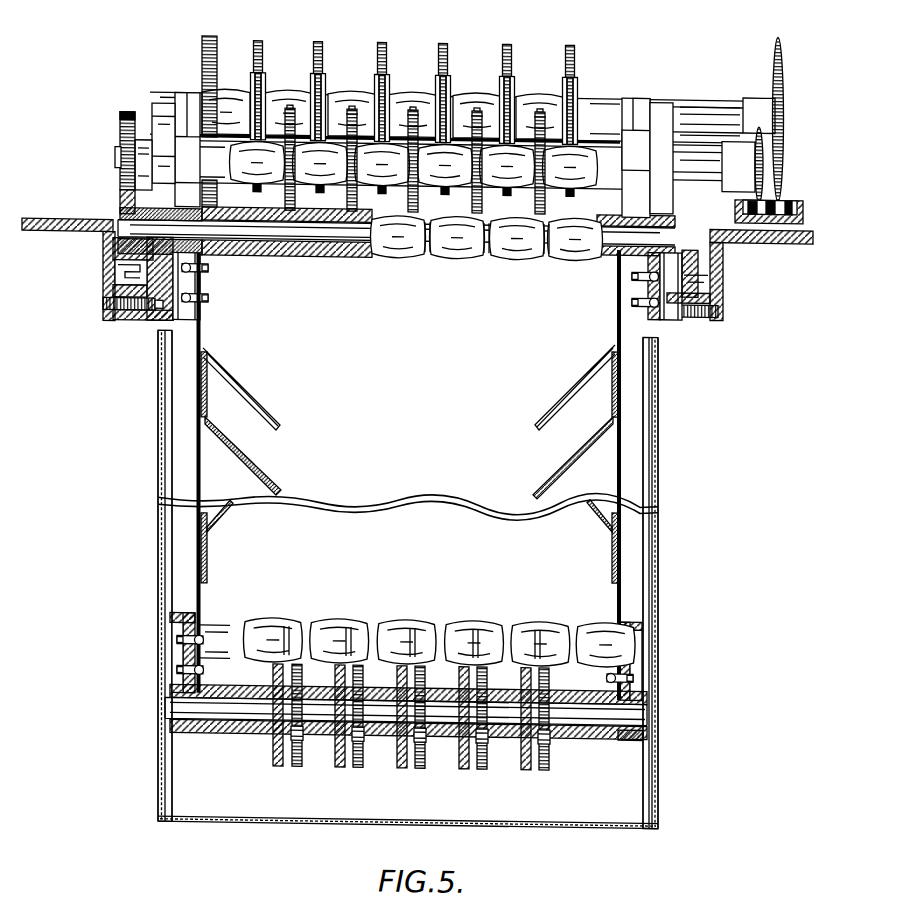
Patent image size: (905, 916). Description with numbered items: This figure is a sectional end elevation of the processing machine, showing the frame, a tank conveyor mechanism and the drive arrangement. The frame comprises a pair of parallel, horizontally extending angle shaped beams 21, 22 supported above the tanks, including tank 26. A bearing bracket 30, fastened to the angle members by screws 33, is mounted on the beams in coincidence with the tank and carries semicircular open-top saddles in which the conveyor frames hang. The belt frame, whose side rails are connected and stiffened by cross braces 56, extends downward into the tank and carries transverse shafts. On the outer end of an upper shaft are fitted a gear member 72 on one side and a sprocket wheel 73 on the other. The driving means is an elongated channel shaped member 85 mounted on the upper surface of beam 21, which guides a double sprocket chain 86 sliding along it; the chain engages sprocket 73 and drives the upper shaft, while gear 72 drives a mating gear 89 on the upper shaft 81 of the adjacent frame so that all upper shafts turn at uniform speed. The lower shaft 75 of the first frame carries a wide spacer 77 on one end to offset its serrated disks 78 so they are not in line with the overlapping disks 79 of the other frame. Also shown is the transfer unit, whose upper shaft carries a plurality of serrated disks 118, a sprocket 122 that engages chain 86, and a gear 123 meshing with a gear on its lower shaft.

The angle shaped beam 21 is at (733, 237).
The angle shaped beam 22 is at (97, 237).
The tank 26 is at (658, 575).
The bearing bracket 30 is at (148, 322).
The screw 33 is at (100, 311).
The cross brace 56 is at (583, 448).
The gear member 72 is at (120, 147).
The sprocket wheel 73 is at (730, 146).
The lower shaft 75 is at (650, 709).
The wide spacer 77 is at (608, 733).
The serrated disk 78 is at (469, 768).
The serrated disk 79 is at (421, 770).
The upper shaft 81 is at (311, 240).
The channel shaped member 85 is at (753, 195).
The double sprocket chain 86 is at (789, 195).
The mating gear 89 is at (120, 214).
The serrated disk 118 is at (503, 50).
The sprocket 122 is at (773, 48).
The gear 123 is at (203, 49).